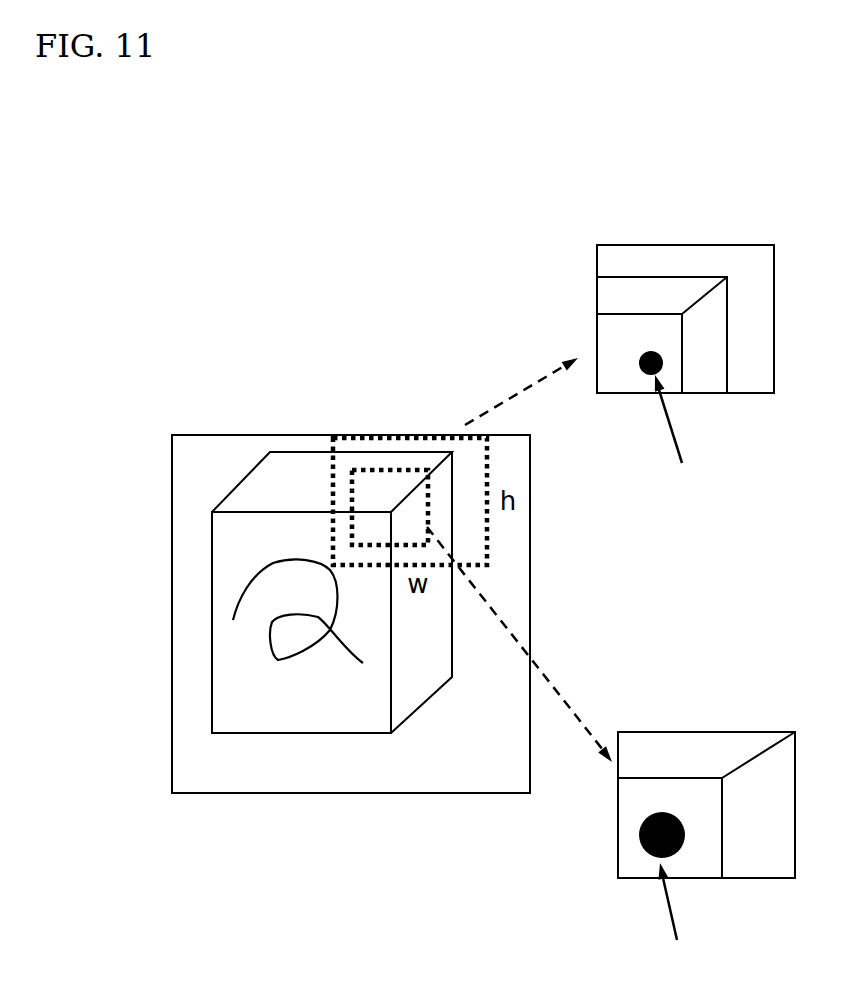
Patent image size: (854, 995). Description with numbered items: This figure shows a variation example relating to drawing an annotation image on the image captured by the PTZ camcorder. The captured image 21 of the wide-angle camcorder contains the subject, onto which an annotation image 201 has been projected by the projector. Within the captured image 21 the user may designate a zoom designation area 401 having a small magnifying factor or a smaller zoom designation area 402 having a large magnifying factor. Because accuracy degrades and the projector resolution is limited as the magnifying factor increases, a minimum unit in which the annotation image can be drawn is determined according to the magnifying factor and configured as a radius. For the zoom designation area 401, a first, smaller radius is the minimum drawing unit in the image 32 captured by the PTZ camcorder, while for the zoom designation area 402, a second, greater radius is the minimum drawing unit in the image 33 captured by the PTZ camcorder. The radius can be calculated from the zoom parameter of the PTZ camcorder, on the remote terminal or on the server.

The captured image 21 is at (193, 435).
The annotation image 201 is at (242, 648).
The zoom designation area 401 is at (442, 420).
The zoom designation area 402 is at (372, 455).
The image captured by the PTZ camcorder 32 is at (677, 243).
The image captured by the PTZ camcorder 33 is at (675, 732).